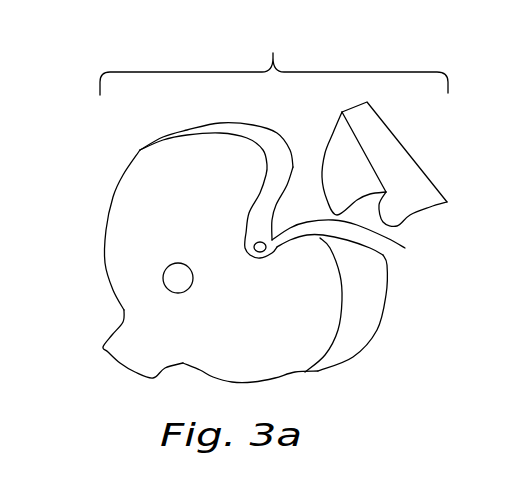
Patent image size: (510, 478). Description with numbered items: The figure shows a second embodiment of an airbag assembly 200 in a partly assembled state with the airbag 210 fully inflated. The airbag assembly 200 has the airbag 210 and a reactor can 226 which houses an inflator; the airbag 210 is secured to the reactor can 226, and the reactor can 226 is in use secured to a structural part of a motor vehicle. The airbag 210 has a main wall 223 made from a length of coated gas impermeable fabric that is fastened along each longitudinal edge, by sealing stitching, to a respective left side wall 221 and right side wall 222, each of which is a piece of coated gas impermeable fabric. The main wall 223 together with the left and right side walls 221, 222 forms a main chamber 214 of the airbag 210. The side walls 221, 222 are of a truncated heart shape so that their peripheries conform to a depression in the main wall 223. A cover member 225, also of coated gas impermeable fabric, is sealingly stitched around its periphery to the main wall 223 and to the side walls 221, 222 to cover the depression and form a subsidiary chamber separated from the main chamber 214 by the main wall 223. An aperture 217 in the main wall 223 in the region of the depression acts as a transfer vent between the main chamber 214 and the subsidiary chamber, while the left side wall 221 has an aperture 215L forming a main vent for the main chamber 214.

The airbag assembly 200 is at (274, 61).
The airbag 210 is at (166, 134).
The main chamber 214 is at (226, 346).
The aperture 215L is at (163, 270).
The aperture 217 is at (361, 241).
The side wall 221 is at (117, 218).
The side wall 222 is at (389, 271).
The main wall 223 is at (266, 142).
The cover member 225 is at (382, 139).
The reactor can 226 is at (120, 363).